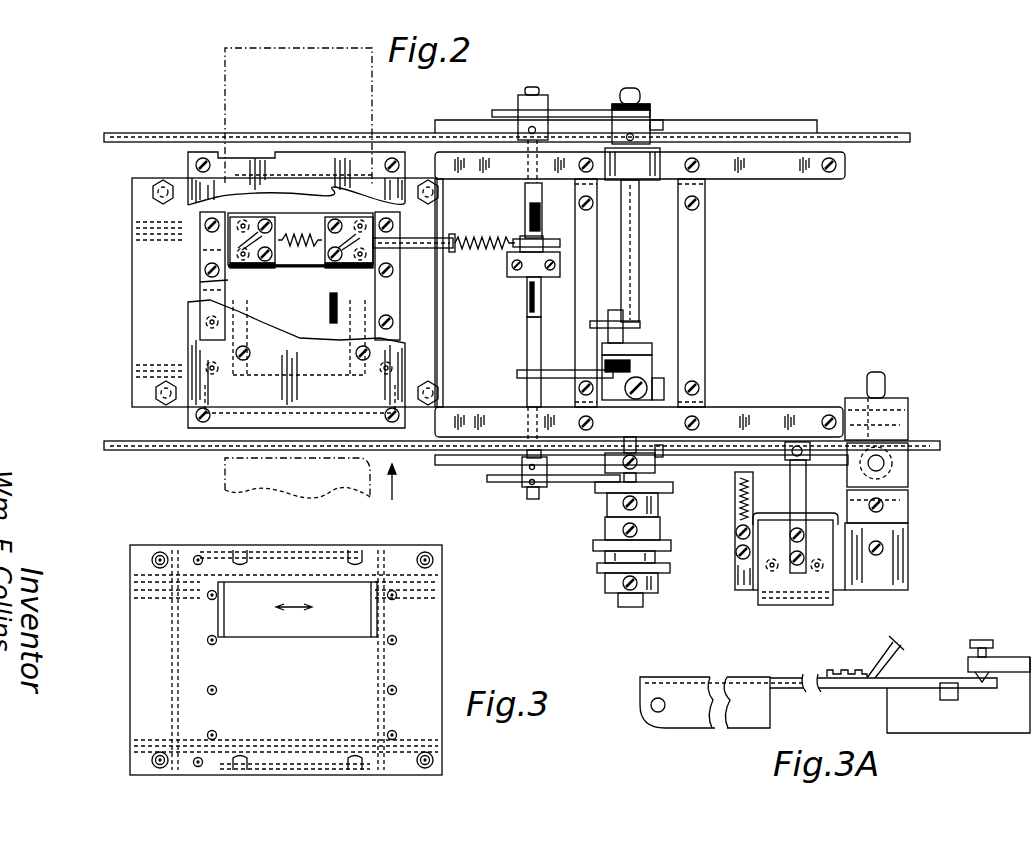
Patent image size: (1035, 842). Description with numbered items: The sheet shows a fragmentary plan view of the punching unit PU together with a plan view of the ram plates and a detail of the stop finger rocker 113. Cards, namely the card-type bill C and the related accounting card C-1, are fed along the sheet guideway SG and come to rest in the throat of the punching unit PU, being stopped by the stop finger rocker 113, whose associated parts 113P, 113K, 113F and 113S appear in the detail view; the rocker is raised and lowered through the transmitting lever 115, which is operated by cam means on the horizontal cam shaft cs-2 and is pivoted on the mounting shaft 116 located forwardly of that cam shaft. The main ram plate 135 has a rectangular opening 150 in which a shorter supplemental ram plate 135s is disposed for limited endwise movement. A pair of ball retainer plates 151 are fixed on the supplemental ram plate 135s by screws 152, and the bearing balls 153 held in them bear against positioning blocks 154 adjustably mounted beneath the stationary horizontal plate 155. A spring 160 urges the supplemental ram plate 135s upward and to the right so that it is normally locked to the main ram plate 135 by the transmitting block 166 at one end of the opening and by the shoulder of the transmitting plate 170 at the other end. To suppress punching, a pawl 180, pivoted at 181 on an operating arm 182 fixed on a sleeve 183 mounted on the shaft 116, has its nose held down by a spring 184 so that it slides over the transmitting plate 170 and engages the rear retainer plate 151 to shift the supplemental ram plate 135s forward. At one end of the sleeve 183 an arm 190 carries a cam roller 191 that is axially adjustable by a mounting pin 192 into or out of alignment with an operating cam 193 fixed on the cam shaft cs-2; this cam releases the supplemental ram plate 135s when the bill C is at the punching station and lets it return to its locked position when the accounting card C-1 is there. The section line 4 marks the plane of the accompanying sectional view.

In FIG. 2, the accounting card C-1 is at (225, 80).
In FIG. 2, the section line 4- 4 is at (185, 250).
In FIG. 2, the punching unit Pu is at (116, 297).
In FIG. 2, the sheet guideway SG is at (228, 280).
In FIG. 2, the transmitting block 166 is at (205, 256).
In FIG. 2, the ball retainer plates 151 is at (250, 222).
In FIG. 2, the screws 152 is at (290, 222).
In FIG. 2, the spring 160 is at (300, 233).
In FIG. 2, the bearing balls 153 is at (243, 272).
In FIG. 2, the supplemental ram plate 135s is at (290, 268).
In FIG. 3, the supplemental ram plate 135s is at (335, 630).
In FIG. 2, the positioning blocks 154 is at (255, 345).
In FIG. 2, the stationary horizontal plate 155 is at (192, 345).
In FIG. 2, the main ram plate 135 is at (138, 365).
In FIG. 3, the main ram plate 135 is at (150, 646).
In FIG. 2, the card-type bill C is at (225, 472).
In FIG. 2, the pawl 180 is at (440, 238).
In FIG. 2, the spring 184 is at (475, 240).
In FIG. 2, the operating arm 182 is at (507, 262).
In FIG. 2, the pivot 181 is at (527, 282).
In FIG. 2, the transmitting lever 115 is at (566, 110).
In FIG. 2, the mounting shaft 116 is at (530, 500).
In FIG. 2, the cam shaft cs-2 is at (645, 100).
In FIG. 2, the mounting pin 192 is at (623, 320).
In FIG. 2, the transmitting plate 170 is at (420, 335).
In FIG. 2, the sleeve 183 is at (520, 358).
In FIG. 2, the arm 190 is at (553, 370).
In FIG. 2, the cam roller 191 is at (640, 380).
In FIG. 2, the operating cam 193 is at (660, 385).
In FIG. 3, the opening 150 is at (236, 630).
In FIG. 3A, the stop finger rocker 113 is at (838, 688).
In FIG. 3A, the pivot 113P is at (655, 712).
In FIG. 3A, the key 113K is at (950, 702).
In FIG. 3A, the frame 113F is at (1000, 736).
In FIG. 3A, the set screw 113S is at (985, 640).